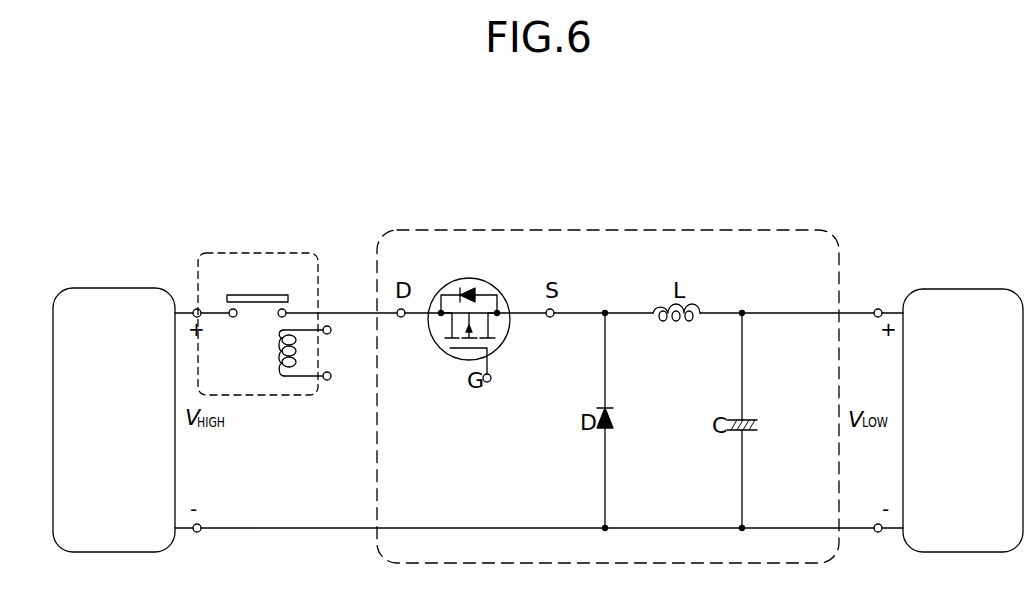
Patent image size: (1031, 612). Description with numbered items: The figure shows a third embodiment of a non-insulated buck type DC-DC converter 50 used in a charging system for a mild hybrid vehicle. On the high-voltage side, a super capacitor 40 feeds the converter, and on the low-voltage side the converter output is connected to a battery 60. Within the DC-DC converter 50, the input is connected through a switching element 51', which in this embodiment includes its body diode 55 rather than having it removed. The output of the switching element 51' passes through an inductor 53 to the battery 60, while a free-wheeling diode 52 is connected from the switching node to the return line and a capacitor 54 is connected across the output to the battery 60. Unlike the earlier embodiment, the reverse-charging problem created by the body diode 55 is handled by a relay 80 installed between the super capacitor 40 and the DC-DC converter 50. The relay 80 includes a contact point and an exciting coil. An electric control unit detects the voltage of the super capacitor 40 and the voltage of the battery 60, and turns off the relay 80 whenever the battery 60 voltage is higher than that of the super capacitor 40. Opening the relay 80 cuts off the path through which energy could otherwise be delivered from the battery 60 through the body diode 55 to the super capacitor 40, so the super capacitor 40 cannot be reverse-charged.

The super capacitor 40 is at (117, 288).
The relay 80 is at (269, 250).
The DC-DC converter 50 is at (628, 230).
The switching element 51' is at (469, 308).
The body diode 55 is at (481, 291).
The free-wheeling diode 52 is at (608, 405).
The inductor 53 is at (697, 300).
The capacitor 54 is at (746, 418).
The battery 60 is at (967, 288).